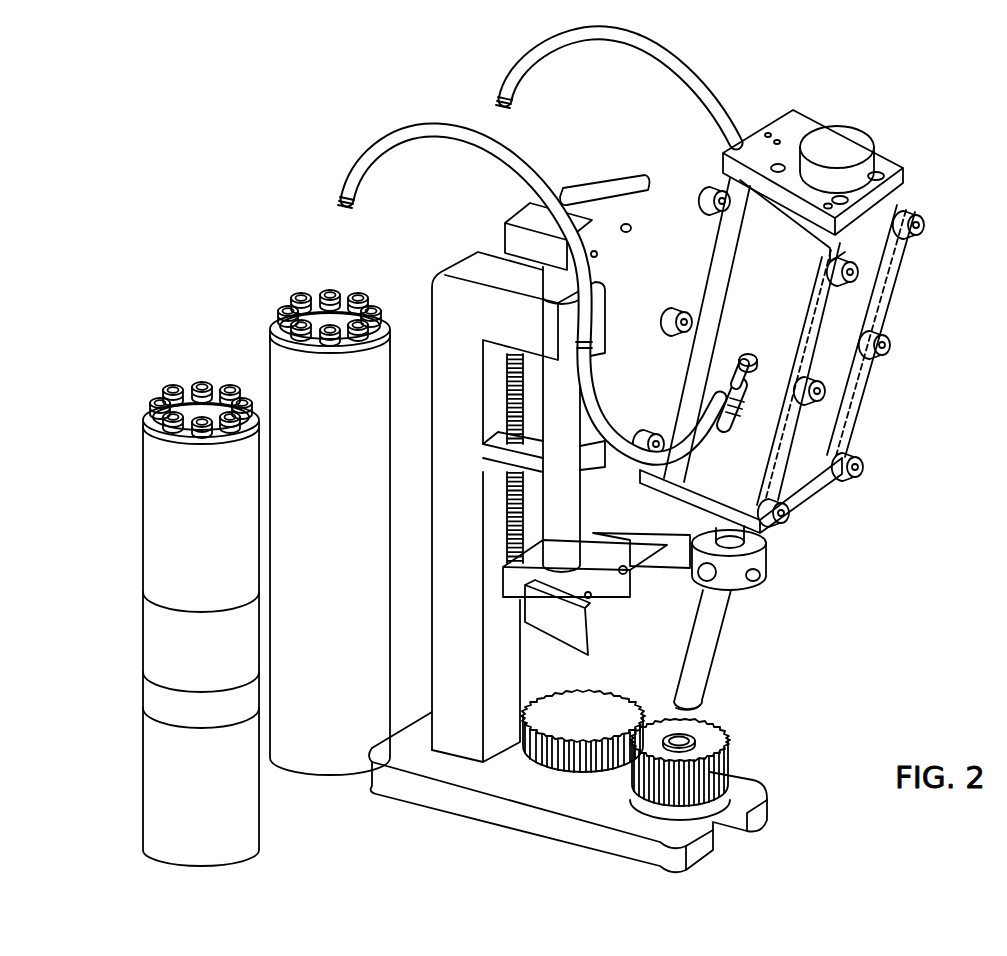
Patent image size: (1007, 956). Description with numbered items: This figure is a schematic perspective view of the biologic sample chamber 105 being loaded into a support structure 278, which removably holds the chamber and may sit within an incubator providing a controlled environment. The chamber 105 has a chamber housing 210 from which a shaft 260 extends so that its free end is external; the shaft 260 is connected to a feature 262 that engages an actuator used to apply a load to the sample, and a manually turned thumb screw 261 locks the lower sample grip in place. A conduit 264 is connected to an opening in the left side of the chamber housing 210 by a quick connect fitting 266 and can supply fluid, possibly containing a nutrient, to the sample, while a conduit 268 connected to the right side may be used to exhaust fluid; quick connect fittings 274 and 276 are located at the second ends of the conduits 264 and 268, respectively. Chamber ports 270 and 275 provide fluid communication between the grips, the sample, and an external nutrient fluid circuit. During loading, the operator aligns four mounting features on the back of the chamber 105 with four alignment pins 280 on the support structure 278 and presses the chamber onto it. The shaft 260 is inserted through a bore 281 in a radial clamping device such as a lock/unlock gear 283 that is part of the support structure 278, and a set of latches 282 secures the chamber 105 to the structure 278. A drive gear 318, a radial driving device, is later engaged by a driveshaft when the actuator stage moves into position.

The biologic sample chamber 105 is at (788, 305).
The chamber housing 210 is at (748, 247).
The shaft 260 is at (730, 617).
The thumb screw 261 is at (790, 536).
The feature 262 is at (711, 736).
The conduit 264 is at (493, 287).
The quick connect fitting 266 is at (718, 352).
The conduit 268 is at (580, 83).
The chamber port 270 is at (906, 184).
The quick connect fitting 274 is at (340, 203).
The chamber port 275 is at (768, 577).
The quick connect fitting 276 is at (497, 103).
The support structure 278 is at (436, 262).
The alignment pins 280 is at (597, 257).
The bore 281 is at (679, 736).
The latches 282 is at (597, 385).
The lock/unlock gear 283 is at (722, 737).
The drive gear 318 is at (565, 740).